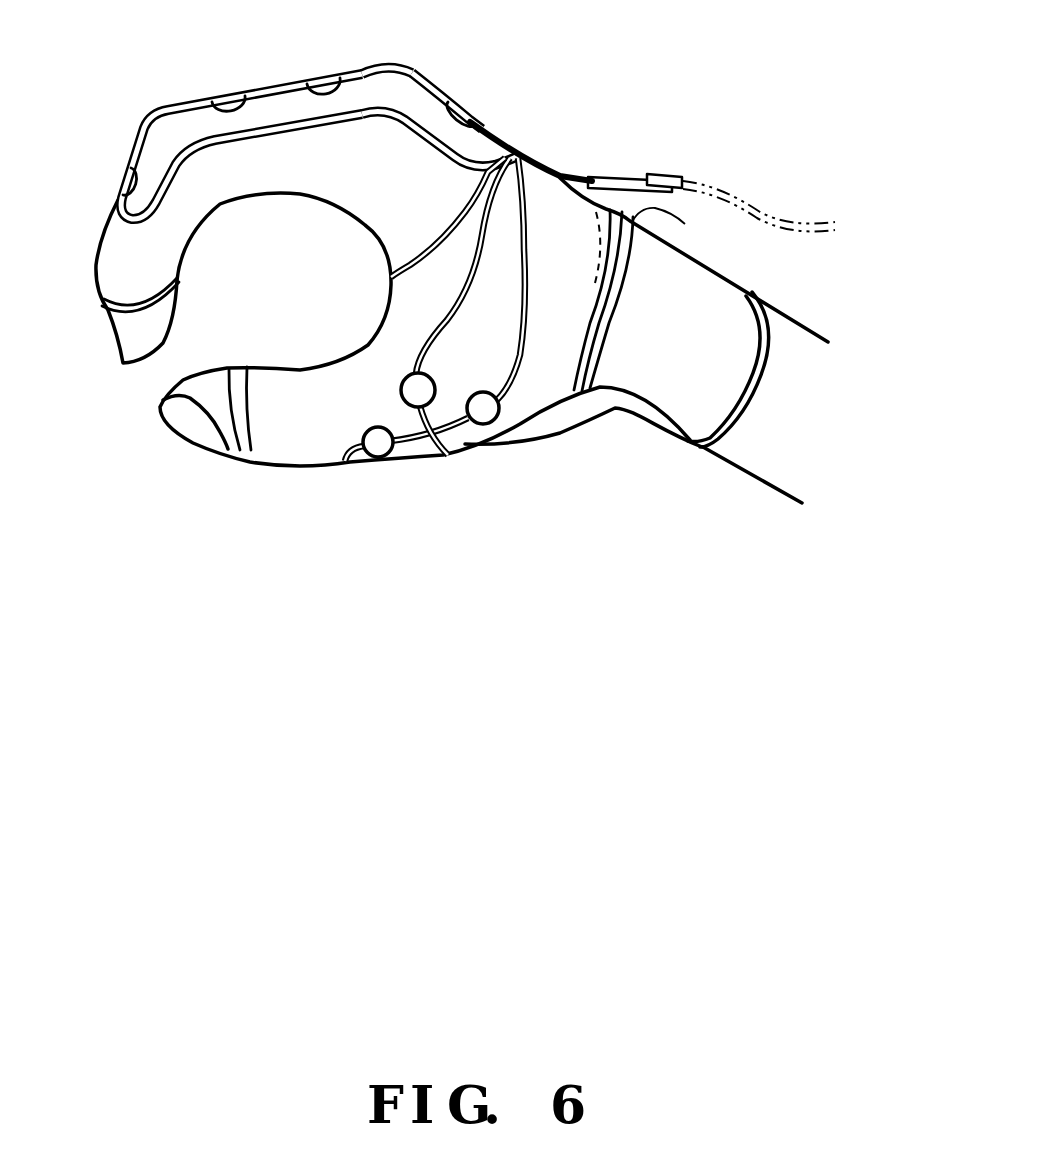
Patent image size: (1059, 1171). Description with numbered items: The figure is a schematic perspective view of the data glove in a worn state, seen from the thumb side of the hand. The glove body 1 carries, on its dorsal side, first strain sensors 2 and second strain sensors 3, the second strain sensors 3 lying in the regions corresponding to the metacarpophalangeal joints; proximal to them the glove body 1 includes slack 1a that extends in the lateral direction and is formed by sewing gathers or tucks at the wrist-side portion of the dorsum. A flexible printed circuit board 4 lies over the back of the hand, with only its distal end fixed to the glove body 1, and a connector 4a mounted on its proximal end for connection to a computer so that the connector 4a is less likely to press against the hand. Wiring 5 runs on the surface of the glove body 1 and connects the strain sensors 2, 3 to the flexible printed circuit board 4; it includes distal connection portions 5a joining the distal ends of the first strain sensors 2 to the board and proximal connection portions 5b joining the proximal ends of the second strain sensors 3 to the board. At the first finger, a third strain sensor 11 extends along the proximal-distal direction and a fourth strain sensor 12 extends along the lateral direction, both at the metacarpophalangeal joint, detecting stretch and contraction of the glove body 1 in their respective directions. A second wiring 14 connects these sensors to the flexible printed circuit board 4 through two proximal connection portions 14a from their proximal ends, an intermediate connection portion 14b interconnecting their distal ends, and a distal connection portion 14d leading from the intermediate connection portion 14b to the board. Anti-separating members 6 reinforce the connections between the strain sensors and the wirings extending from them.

The glove body 1 is at (664, 442).
The slack 1a is at (700, 228).
The first strain sensor 2 is at (157, 108).
The second strain sensor 3 is at (400, 67).
The flexible printed circuit board 4 is at (622, 175).
The connector 4a is at (662, 174).
The wiring 5 is at (492, 120).
The distal connection portion 5a is at (193, 147).
The proximal connection portion 5b is at (536, 111).
The anti-separating member 6 is at (527, 481).
The third strain sensor 11 is at (458, 438).
The fourth strain sensor 12 is at (438, 460).
The second wiring 14 is at (529, 201).
The proximal connection portion 14a is at (560, 473).
The intermediate connection portion 14b is at (352, 462).
The distal connection portion 14d is at (392, 268).